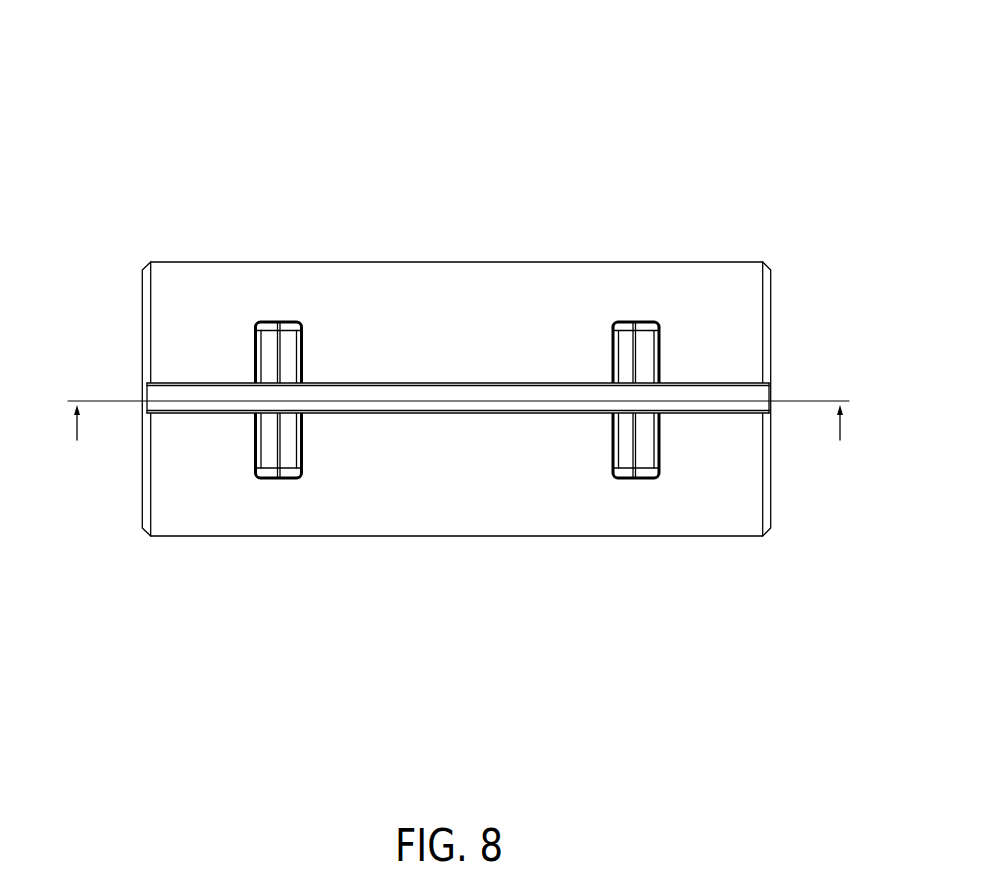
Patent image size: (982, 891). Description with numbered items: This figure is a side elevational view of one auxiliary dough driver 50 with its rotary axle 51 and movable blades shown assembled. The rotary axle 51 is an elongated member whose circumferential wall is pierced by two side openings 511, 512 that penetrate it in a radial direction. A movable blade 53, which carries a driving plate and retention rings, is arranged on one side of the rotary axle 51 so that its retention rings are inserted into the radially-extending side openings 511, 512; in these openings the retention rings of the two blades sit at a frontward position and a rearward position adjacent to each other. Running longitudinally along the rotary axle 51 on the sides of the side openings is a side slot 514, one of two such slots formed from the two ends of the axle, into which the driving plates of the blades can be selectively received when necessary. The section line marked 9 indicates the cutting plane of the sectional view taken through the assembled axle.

The auxiliary dough driver 50 is at (178, 137).
The rotary axle 51 is at (460, 285).
The side opening 511 is at (640, 321).
The side opening 512 is at (278, 321).
The movable blade 53 is at (682, 381).
The side slot 514 is at (772, 382).
The section line 9- 9 is at (458, 439).